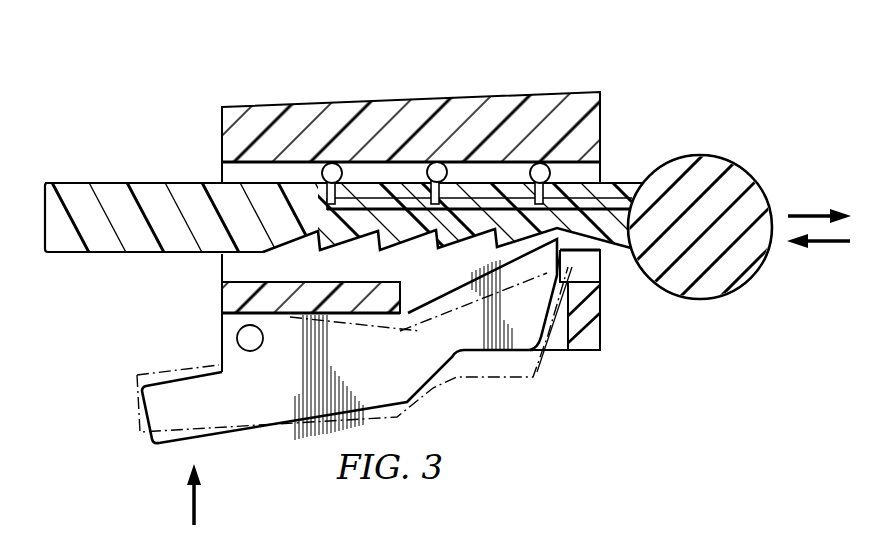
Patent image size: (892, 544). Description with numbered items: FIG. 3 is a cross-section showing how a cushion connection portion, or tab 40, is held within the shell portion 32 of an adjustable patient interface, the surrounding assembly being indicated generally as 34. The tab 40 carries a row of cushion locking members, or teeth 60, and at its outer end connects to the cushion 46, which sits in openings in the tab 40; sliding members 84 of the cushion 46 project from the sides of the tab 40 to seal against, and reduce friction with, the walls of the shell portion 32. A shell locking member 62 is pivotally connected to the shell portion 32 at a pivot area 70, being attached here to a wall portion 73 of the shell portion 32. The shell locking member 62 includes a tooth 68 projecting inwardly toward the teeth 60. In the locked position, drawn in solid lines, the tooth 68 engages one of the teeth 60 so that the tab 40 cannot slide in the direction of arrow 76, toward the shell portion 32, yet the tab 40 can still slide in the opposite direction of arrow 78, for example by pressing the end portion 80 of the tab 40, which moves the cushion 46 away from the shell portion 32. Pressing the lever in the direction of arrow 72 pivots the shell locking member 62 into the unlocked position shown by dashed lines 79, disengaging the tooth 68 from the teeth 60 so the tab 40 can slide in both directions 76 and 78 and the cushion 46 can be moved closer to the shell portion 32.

The shell portion 32 is at (267, 106).
The actuator assembly 34 is at (297, 60).
The cushion connection portion (tab) 40 is at (173, 179).
The cushion 46 is at (722, 156).
The cushion locking members (teeth) 60 is at (322, 252).
The shell locking member 62 is at (420, 376).
The tooth 68 is at (578, 250).
The pivot point (pivot area) 70 is at (249, 352).
The arrow 72 is at (194, 505).
The wall portion 73 is at (232, 282).
The arrow 76 is at (828, 243).
The arrow 78 is at (805, 214).
The dashed lines 79 is at (542, 368).
The end portion 80 is at (62, 183).
The sliding members 84 is at (345, 172).